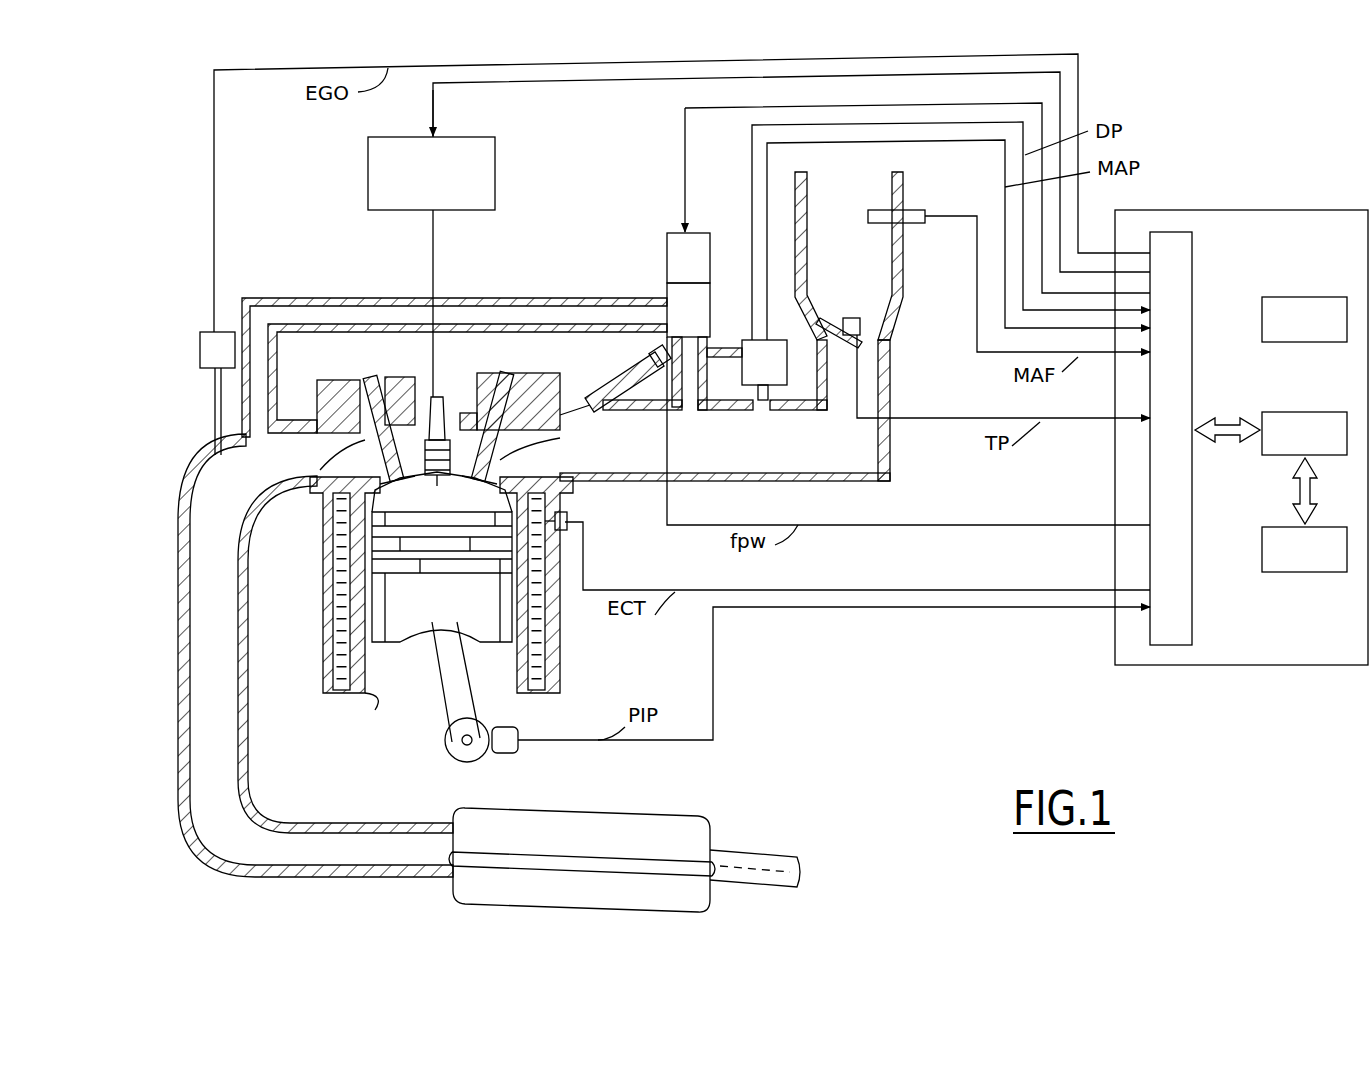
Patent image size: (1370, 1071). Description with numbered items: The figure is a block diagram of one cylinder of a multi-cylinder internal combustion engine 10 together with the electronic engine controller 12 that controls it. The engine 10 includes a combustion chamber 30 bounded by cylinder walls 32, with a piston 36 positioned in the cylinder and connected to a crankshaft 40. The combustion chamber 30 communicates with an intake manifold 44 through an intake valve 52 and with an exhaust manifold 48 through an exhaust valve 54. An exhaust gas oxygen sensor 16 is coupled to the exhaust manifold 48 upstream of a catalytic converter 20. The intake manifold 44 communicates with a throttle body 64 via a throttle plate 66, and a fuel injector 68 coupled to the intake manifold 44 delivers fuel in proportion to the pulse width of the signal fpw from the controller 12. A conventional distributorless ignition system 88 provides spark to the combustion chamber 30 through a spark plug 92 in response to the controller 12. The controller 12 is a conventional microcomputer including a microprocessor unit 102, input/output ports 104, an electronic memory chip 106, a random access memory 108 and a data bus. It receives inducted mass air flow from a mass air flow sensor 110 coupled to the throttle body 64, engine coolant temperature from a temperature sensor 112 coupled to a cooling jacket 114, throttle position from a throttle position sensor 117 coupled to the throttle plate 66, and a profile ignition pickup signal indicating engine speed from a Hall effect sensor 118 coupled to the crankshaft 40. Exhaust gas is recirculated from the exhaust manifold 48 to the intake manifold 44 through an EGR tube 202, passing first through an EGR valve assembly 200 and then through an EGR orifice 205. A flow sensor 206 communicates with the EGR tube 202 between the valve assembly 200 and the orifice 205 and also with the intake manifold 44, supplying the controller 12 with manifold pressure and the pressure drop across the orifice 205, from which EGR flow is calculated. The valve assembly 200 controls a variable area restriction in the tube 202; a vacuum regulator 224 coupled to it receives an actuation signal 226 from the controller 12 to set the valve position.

The internal combustion engine 10 is at (342, 752).
The electronic engine controller 12 is at (1307, 208).
The exhaust gas oxygen sensor 16 is at (200, 340).
The catalytic converter 20 is at (590, 813).
The combustion chamber 30 is at (372, 535).
The cylinder walls 32 is at (365, 688).
The piston 36 is at (428, 612).
The crankshaft 40 is at (448, 742).
The intake manifold 44 is at (858, 457).
The exhaust manifold 48 is at (200, 478).
The intake valve 52 is at (497, 465).
The exhaust valve 54 is at (383, 463).
The throttle body 64 is at (815, 212).
The throttle plate 66 is at (832, 330).
The fuel injector 68 is at (615, 382).
The distributorless ignition system 88 is at (490, 138).
The spark plug 92 is at (455, 405).
The microprocessor unit 102 is at (1292, 410).
The input/output ports 104 is at (1195, 248).
The electronic memory chip 106 is at (1312, 297).
The random access memory 108 is at (1318, 575).
The mass air flow sensor 110 is at (870, 212).
The temperature sensor 112 is at (572, 518).
The cooling jacket 114 is at (535, 668).
The throttle position sensor 117 is at (880, 332).
The Hall effect sensor 118 is at (520, 742).
The EGR valve assembly 200 is at (667, 283).
The EGR tube 202 is at (302, 306).
The EGR orifice 205 is at (690, 395).
The flow sensor 206 is at (765, 402).
The vacuum regulator 224 is at (667, 245).
The actuation signal 226 is at (683, 132).